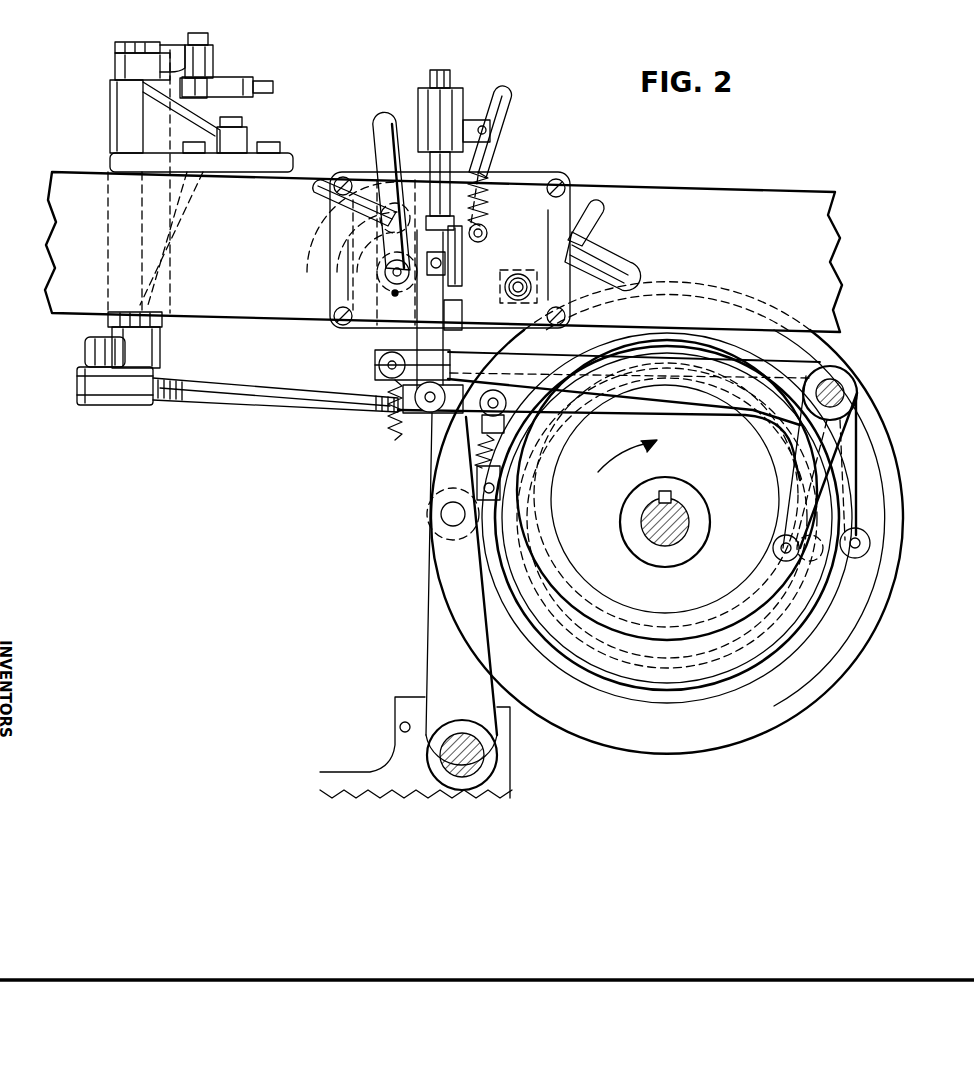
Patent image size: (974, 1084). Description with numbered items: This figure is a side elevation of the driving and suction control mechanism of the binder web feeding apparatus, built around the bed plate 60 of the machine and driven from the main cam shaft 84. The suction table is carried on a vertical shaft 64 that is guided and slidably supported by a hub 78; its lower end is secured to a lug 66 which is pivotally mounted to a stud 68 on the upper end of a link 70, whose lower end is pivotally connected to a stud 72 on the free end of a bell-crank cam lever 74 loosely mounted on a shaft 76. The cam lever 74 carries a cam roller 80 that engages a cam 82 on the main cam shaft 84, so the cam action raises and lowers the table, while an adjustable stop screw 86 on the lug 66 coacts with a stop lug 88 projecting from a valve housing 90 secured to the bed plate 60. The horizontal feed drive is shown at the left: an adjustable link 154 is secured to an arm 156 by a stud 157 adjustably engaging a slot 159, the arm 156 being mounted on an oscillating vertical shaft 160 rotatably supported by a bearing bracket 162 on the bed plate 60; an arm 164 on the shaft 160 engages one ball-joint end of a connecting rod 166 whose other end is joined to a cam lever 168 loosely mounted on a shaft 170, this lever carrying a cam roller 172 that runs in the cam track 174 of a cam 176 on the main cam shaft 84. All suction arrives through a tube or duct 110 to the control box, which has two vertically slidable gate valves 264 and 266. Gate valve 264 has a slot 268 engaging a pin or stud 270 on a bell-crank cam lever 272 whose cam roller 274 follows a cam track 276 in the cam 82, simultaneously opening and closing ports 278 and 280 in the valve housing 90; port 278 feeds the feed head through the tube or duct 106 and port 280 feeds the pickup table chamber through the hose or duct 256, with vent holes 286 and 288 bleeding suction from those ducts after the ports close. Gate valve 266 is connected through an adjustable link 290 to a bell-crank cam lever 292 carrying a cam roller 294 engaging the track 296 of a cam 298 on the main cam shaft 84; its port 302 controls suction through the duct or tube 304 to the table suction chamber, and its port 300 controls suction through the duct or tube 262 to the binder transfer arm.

The bed plate 60 is at (48, 197).
The vertical shaft 64 is at (440, 72).
The lug 66 is at (456, 266).
The stud 68 is at (460, 286).
The link 70 is at (425, 316).
The stud 72 is at (428, 414).
The cam lever 74 is at (705, 424).
The shaft 76 is at (858, 391).
The hub 78 is at (455, 96).
The cam roller 80 is at (858, 556).
The cam 82 is at (848, 560).
The main cam shaft 84 is at (670, 545).
The adjustable stop screw 86 is at (486, 226).
The stop lug 88 is at (462, 318).
The valve housing 90 is at (340, 300).
The tube or duct 106 is at (378, 170).
The tube or duct 110 is at (628, 268).
The adjustable link 154 is at (222, 78).
The arm 156 is at (213, 58).
The stud 157 is at (210, 38).
The slot 159 is at (187, 44).
The oscillating vertical shaft 160 is at (115, 44).
The bearing bracket 162 is at (110, 117).
The arm 164 is at (150, 348).
The connecting rod 166 is at (203, 402).
The cam lever 168 is at (430, 585).
The shaft 170 is at (486, 760).
The cam roller 172 is at (450, 527).
The cam track 174 is at (556, 688).
The cam 176 is at (662, 757).
The hose or duct 256 is at (322, 200).
The duct or tube 262 is at (592, 222).
The gate valve 264 is at (378, 340).
The gate valve 266 is at (457, 448).
The slot 268 is at (376, 356).
The pin or stud 270 is at (378, 370).
The cam lever 272 is at (492, 362).
The cam roller 274 is at (774, 549).
The cam track 276 is at (766, 575).
The port 278 is at (377, 275).
The port 280 is at (340, 250).
The vent hole 286 is at (391, 293).
The vent hole 288 is at (380, 226).
The adjustable link 290 is at (500, 500).
The cam lever 292 is at (495, 432).
The cam roller 294 is at (806, 604).
The track 296 is at (808, 620).
The cam 298 is at (800, 636).
The port 300 is at (527, 266).
The port 302 is at (488, 233).
The duct or tube 304 is at (505, 115).